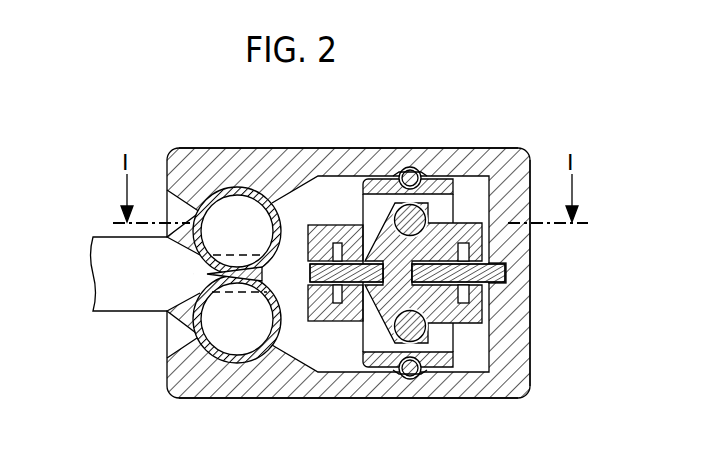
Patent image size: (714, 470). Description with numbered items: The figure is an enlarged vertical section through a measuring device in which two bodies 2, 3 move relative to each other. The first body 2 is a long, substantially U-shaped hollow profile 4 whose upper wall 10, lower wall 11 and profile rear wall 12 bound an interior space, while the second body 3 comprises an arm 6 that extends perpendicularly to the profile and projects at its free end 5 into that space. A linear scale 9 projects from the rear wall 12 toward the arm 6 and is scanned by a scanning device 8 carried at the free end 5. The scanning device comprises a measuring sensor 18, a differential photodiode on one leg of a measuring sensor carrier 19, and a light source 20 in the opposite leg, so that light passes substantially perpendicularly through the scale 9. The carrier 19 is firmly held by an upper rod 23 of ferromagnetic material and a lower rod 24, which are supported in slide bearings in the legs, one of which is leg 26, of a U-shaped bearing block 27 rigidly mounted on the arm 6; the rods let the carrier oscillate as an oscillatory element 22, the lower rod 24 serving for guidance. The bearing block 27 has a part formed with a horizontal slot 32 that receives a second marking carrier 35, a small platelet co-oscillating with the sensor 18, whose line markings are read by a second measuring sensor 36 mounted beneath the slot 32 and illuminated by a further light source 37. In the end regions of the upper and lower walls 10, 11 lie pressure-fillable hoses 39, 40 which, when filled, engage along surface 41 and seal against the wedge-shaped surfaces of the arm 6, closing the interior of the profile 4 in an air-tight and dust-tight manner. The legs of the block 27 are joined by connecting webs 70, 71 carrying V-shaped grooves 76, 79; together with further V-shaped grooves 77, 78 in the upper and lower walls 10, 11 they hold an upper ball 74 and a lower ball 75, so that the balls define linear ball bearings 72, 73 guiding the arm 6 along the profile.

The body 2 is at (488, 404).
The body 3 is at (138, 330).
The U-shaped profile 4 is at (520, 345).
The free end of arm 5 is at (299, 240).
The arm 6 is at (149, 291).
The scanning device 8 is at (468, 334).
The linear scale 9 is at (506, 273).
The upper wall 10 is at (256, 122).
The lower wall 11 is at (212, 392).
The profile rear wall 12 is at (522, 378).
The measuring sensor 18 is at (472, 250).
The measuring sensor carrier 19 is at (430, 336).
The light source 20 is at (470, 297).
The oscillatory element 22 is at (460, 216).
The upper rod 23 is at (421, 211).
The lower rod 24 is at (422, 324).
The leg of bearing block 26 is at (387, 220).
The bearing block 27 is at (363, 355).
The slot 32 is at (310, 271).
The second marking carrier 35 is at (275, 296).
The second measuring sensor 36 is at (337, 304).
The light source 37 is at (340, 243).
The hose 39 is at (222, 200).
The hose 40 is at (198, 322).
The engagement surface 41 is at (245, 257).
The connecting web 70 is at (445, 181).
The connecting web 71 is at (445, 376).
The linear ball bearing 72 is at (414, 133).
The linear ball bearing 73 is at (412, 420).
The upper ball 74 is at (417, 168).
The lower ball 75 is at (413, 381).
The V-shaped groove 76 is at (385, 180).
The V-shaped groove 77 is at (405, 170).
The V-shaped groove 78 is at (405, 380).
The V-shaped groove 79 is at (394, 376).